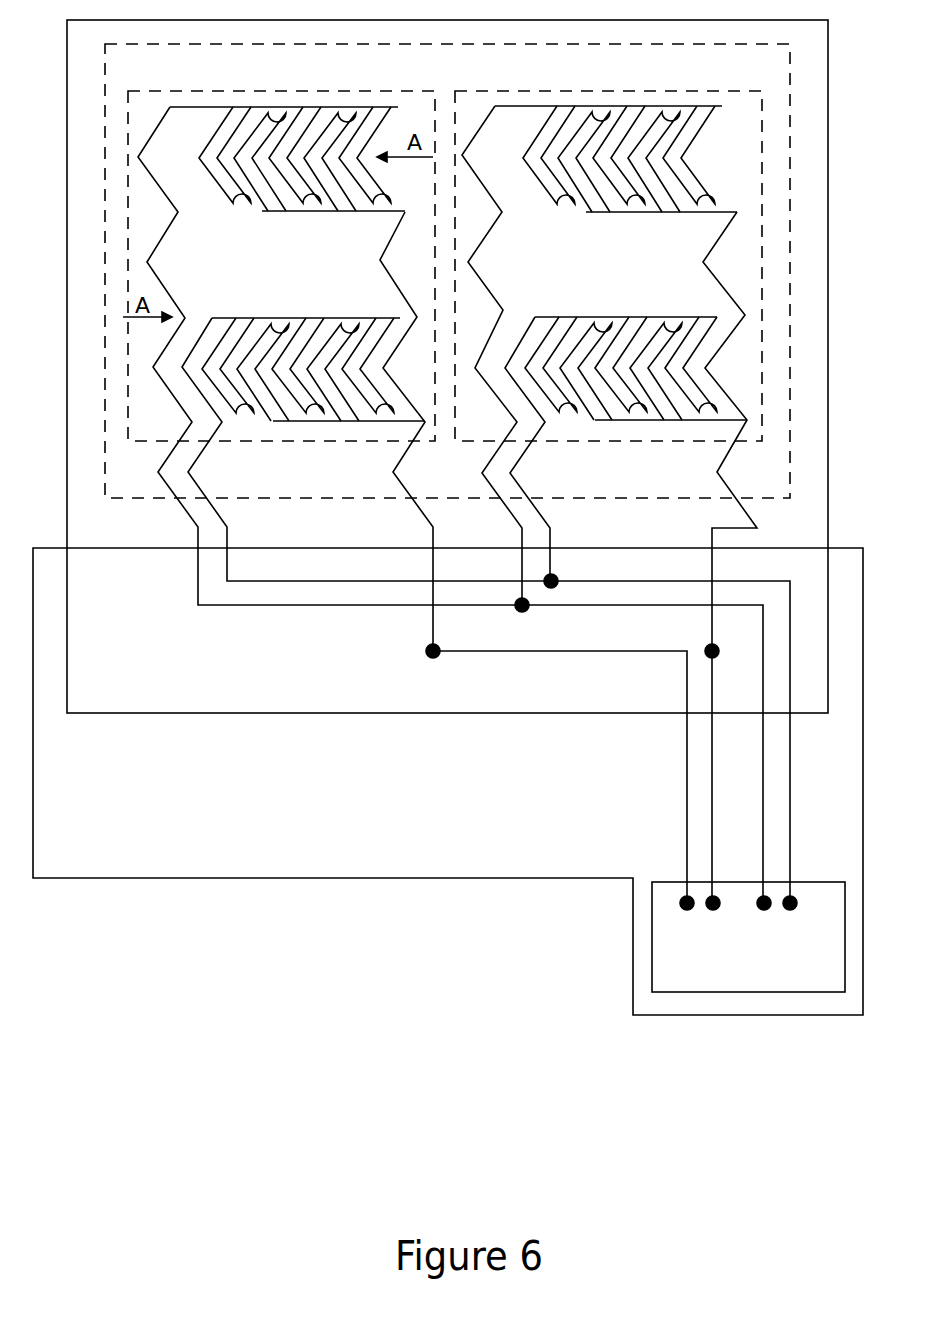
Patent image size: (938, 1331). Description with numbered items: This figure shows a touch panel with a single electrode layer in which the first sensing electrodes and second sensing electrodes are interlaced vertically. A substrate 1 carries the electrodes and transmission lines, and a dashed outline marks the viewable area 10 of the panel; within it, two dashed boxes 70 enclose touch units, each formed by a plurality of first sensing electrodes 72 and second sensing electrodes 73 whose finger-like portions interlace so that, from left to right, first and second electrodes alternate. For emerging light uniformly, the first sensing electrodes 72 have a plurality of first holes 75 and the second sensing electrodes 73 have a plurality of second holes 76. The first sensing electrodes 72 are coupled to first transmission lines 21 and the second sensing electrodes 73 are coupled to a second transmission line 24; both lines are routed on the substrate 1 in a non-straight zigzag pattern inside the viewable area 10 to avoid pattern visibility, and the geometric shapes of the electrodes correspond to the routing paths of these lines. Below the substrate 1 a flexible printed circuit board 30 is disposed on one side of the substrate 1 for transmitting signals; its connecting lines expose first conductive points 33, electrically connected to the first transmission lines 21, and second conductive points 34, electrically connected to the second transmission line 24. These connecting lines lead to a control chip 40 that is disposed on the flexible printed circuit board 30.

The substrate 1 is at (67, 22).
The viewable area 10 is at (103, 102).
The sensing element 70 is at (307, 89).
The first sensing electrode 72 is at (215, 137).
The second sensing electrode 73 is at (268, 212).
The first transmission line 21 is at (167, 235).
The second transmission line 24 is at (395, 287).
The first hole 75 is at (240, 317).
The second hole 76 is at (353, 424).
The first conductive point 33 is at (522, 612).
The second conductive point 34 is at (433, 658).
The flexible printed circuit board 30 is at (301, 880).
The control chip 40 is at (652, 927).